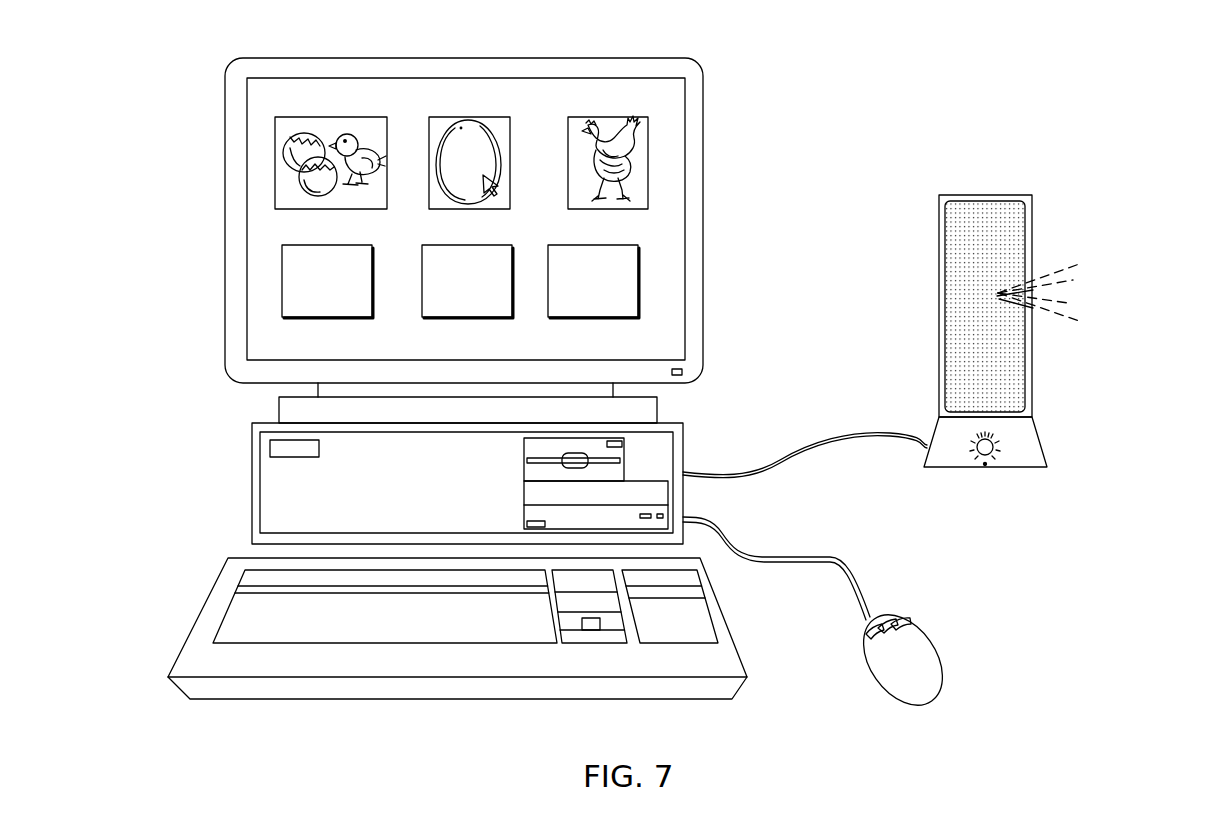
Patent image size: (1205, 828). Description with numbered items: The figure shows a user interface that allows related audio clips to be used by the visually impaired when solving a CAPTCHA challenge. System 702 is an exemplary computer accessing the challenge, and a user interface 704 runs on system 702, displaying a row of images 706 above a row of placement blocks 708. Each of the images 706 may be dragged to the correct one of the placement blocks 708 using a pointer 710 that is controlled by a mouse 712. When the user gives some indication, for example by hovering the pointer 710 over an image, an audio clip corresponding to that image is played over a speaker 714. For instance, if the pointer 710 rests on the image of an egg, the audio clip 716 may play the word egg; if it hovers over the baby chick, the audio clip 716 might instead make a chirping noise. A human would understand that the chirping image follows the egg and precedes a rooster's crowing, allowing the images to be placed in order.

The system 702 is at (225, 338).
The user interface 704 is at (262, 311).
The images 706 is at (593, 117).
The placement blocks 708 is at (572, 318).
The pointer 710 is at (497, 187).
The mouse 712 is at (927, 657).
The speaker 714 is at (1047, 440).
The audio clip 716 is at (1117, 277).